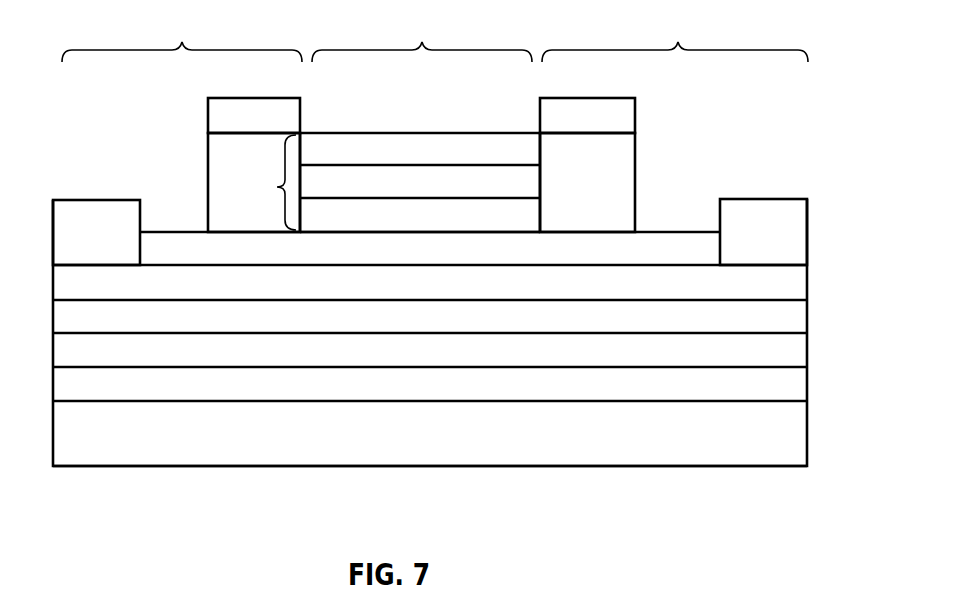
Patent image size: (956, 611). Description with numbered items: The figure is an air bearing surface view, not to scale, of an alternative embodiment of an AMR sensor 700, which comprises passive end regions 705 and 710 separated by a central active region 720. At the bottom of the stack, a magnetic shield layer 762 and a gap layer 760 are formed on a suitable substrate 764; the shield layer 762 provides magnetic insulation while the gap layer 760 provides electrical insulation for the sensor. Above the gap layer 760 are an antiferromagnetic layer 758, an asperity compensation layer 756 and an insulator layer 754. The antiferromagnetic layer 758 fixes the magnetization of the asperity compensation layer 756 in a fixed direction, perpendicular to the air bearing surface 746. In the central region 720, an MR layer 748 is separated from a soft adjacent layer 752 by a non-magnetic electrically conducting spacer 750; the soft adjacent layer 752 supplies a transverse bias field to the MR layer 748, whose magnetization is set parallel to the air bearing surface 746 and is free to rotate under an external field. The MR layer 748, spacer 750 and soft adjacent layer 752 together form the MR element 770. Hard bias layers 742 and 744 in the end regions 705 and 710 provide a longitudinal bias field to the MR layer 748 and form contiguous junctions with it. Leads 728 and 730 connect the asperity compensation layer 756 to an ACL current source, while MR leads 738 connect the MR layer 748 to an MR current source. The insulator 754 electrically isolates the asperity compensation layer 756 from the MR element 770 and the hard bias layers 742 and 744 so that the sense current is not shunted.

The AMR sensor 700 is at (156, 545).
The passive end region 705 is at (182, 35).
The passive end region 710 is at (675, 35).
The central active region 720 is at (420, 120).
The first ACL lead 728 is at (77, 240).
The second ACL lead 730 is at (790, 252).
The first MR lead 738 is at (209, 129).
The hard bias layer 742 is at (222, 159).
The hard bias layer 744 is at (607, 153).
The air bearing surface 746 is at (322, 150).
The MR layer 748 is at (520, 150).
The spacer 750 is at (520, 187).
The soft adjacent layer 752 is at (513, 222).
The insulator layer 754 is at (645, 250).
The asperity compensation layer 756 is at (778, 288).
The antiferromagnetic layer 758 is at (782, 323).
The gap layer 760 is at (780, 355).
The magnetic shield layer 762 is at (782, 390).
The substrate 764 is at (783, 438).
The MR element 770 is at (277, 188).